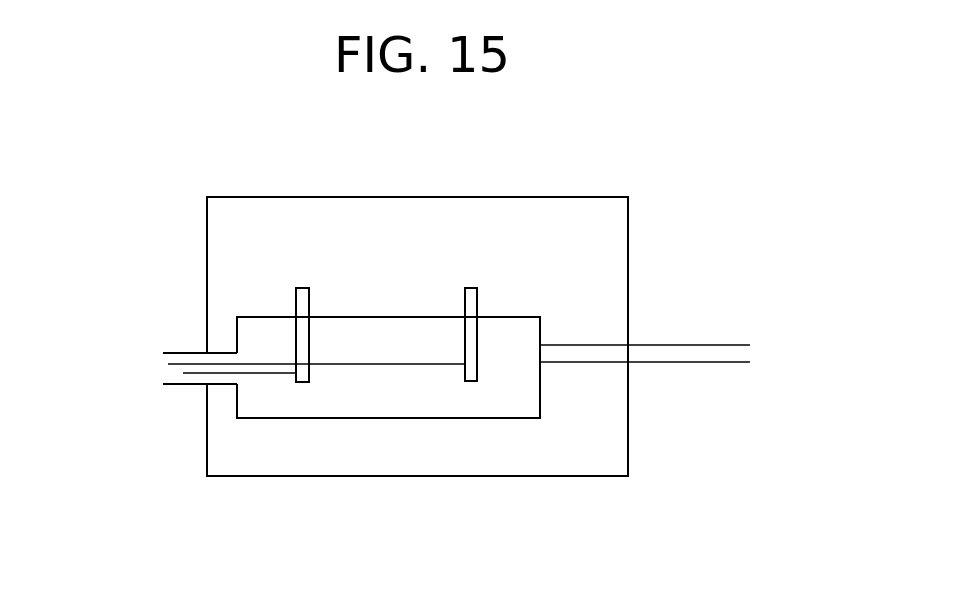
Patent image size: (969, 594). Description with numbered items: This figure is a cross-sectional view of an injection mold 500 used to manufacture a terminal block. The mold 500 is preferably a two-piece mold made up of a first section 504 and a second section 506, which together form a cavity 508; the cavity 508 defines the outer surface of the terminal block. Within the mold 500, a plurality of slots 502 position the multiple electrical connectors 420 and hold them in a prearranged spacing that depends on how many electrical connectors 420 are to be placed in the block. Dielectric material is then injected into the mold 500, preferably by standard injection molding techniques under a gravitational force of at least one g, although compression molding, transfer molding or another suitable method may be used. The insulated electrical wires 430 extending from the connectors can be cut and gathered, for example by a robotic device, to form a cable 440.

The mold 500 is at (630, 258).
The first section 504 is at (615, 205).
The second section 506 is at (612, 458).
The electrical connector 420 is at (480, 300).
The insulated electrical wire 430 is at (397, 364).
The cable 440 is at (168, 365).
The slot 502 is at (298, 288).
The cavity 508 is at (493, 389).